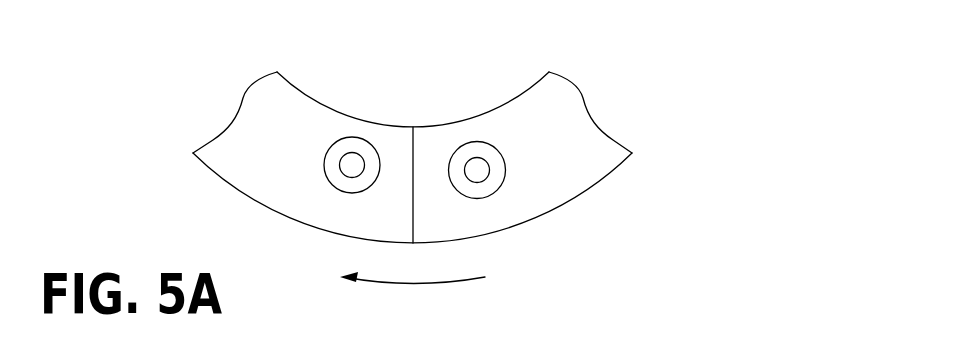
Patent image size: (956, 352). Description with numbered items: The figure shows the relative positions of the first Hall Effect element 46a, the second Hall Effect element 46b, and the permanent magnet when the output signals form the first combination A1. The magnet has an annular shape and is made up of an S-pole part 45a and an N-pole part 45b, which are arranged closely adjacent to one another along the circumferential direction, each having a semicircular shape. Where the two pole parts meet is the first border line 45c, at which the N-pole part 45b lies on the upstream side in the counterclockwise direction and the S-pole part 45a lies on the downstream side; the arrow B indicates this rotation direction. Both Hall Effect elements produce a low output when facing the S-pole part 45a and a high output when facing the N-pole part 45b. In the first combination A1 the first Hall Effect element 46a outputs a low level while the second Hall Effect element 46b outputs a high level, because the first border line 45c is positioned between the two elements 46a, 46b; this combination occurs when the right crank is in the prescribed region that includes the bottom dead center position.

The first combination A1 is at (176, 120).
The S-pole part 45a is at (267, 113).
The N-pole part 45b is at (560, 113).
The first border line 45c is at (402, 126).
The first Hall Effect element 46a is at (347, 137).
The second Hall Effect element 46b is at (477, 141).
The rotation direction B is at (430, 274).